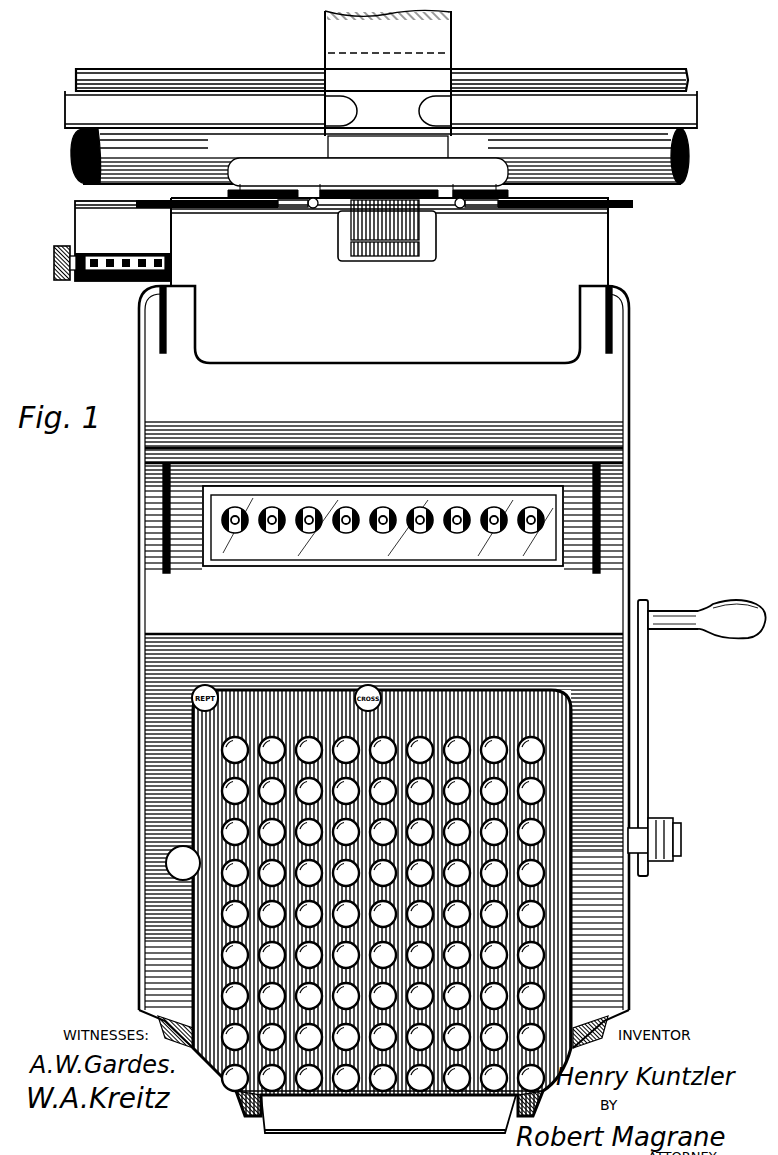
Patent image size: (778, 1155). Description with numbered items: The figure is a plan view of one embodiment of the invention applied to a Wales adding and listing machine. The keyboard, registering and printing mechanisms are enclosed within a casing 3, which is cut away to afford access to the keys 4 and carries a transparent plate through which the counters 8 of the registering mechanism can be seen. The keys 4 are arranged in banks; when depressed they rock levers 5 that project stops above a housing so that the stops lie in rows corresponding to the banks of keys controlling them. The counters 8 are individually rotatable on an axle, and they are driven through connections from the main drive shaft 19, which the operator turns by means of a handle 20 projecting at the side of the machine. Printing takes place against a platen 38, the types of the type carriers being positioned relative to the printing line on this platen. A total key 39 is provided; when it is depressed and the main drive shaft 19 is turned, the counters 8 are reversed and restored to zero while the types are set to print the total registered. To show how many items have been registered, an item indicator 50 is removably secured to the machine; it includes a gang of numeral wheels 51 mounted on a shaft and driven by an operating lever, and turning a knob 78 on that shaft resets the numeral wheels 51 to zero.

The casing 3 is at (384, 709).
The keys 4 is at (212, 987).
The levers 5 is at (308, 545).
The counters 8 is at (300, 522).
The main drive shaft 19 is at (622, 858).
The handle 20 is at (636, 727).
The platen 38 is at (381, 104).
The total key 39 is at (160, 856).
The item indicator 50 is at (123, 241).
The numeral wheels 51 is at (86, 273).
The knob 78 is at (46, 256).